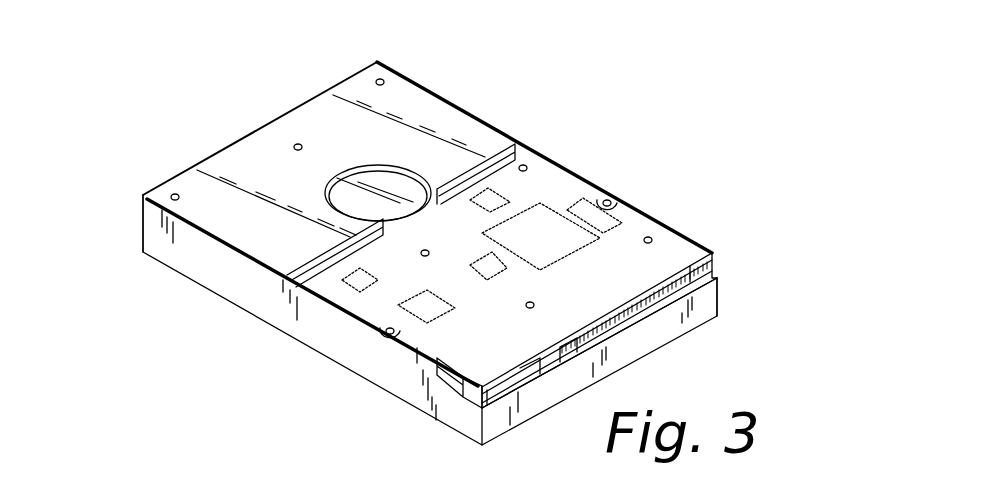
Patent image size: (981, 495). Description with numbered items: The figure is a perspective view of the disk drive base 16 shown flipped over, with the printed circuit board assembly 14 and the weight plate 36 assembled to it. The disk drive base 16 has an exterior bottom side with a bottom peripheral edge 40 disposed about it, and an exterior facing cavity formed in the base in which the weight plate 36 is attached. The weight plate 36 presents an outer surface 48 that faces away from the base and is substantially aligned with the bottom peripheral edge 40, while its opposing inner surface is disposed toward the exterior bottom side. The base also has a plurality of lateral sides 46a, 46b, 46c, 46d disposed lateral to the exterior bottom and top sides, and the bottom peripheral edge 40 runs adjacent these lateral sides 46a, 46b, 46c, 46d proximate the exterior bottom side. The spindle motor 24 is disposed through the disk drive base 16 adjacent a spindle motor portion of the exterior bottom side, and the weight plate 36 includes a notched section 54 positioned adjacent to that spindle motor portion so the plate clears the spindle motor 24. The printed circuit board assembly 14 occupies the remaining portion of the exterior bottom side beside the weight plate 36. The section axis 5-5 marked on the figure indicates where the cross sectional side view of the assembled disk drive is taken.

The axis 5- 5 is at (441, 119).
The printed circuit board assembly 14 is at (552, 173).
The disk drive base 16 is at (348, 355).
The spindle motor 24 is at (340, 192).
The weight plate 36 is at (262, 147).
The bottom peripheral edge 40 is at (207, 158).
The lateral side 46a is at (402, 383).
The lateral side 46b is at (143, 221).
The lateral side 46c is at (722, 293).
The lateral side 46d is at (650, 338).
The outer surface 48 is at (408, 93).
The notched section 54 is at (378, 177).